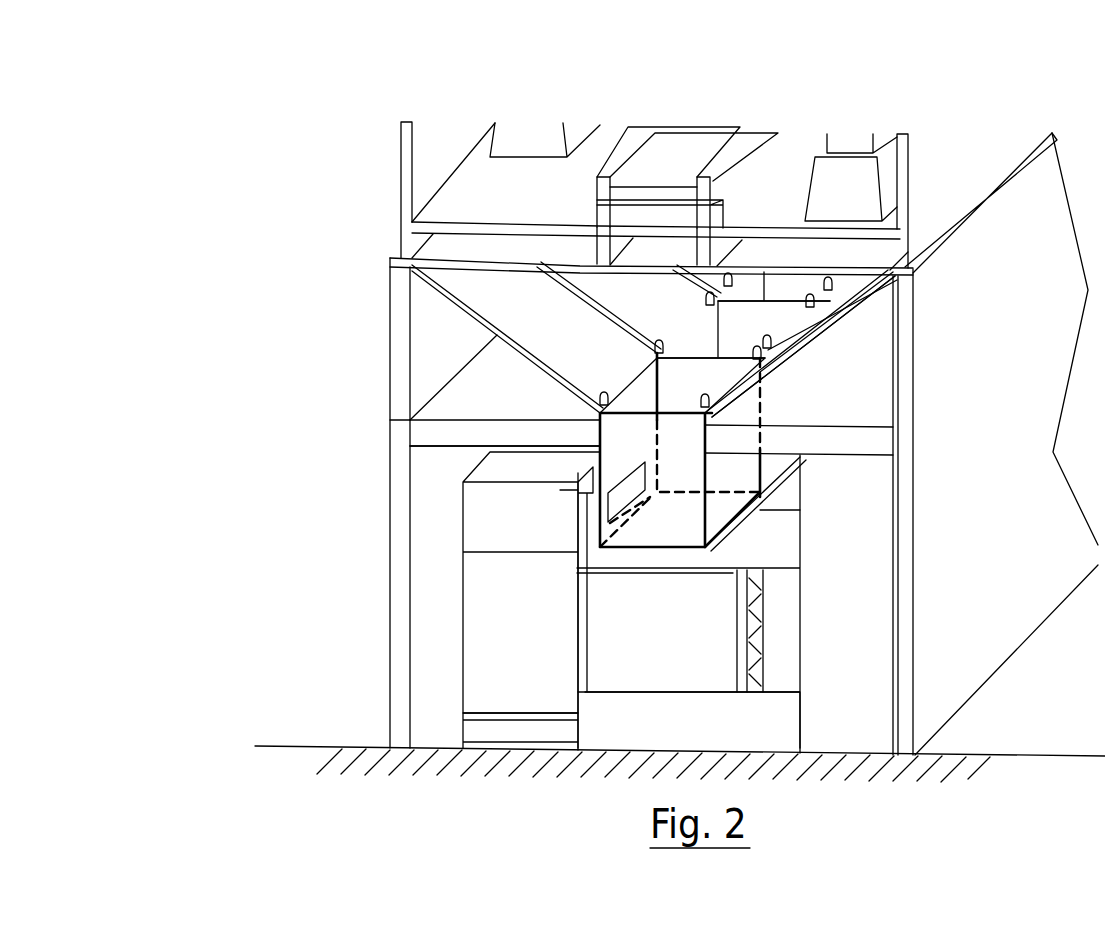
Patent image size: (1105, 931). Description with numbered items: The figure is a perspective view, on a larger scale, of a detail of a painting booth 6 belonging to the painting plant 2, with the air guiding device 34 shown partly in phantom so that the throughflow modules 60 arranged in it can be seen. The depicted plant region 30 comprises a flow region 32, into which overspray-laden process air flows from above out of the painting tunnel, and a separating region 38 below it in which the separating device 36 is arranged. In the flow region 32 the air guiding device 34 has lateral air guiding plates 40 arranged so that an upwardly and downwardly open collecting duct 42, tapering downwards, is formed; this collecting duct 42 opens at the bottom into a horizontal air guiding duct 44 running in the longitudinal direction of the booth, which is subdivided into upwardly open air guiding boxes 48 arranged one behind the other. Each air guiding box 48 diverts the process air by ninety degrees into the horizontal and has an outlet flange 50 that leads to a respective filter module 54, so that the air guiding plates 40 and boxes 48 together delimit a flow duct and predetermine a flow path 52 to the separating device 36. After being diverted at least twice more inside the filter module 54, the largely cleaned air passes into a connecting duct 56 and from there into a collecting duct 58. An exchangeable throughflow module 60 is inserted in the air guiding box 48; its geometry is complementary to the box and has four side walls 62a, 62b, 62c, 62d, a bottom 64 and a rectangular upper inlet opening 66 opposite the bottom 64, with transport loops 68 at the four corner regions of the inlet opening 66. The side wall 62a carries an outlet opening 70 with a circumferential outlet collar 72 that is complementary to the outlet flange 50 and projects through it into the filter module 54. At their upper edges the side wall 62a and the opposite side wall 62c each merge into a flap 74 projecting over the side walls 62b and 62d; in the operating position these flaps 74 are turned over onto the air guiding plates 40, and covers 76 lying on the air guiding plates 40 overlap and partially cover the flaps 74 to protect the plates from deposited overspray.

The bag filling apparatus 2 is at (343, 150).
The painting booth 6 is at (968, 156).
The plant region 30 is at (316, 531).
The flow region 32 is at (411, 375).
The air guiding device 34 is at (727, 410).
The separating device 36 is at (600, 706).
The separating region 38 is at (410, 628).
The air guiding plates 40 is at (428, 288).
The collecting duct 42 is at (675, 303).
The air guiding duct 44 is at (705, 378).
The air guiding boxes 48 is at (597, 441).
The outlet flange 50 is at (590, 523).
The flow path 52 is at (613, 353).
The filter module 54 is at (463, 689).
The connecting duct 56 is at (707, 677).
The collecting duct 58 is at (882, 628).
The throughflow module 60 is at (737, 530).
The side wall 62a is at (640, 398).
The side wall 62b is at (728, 370).
The side wall 62c is at (738, 475).
The side wall 62d is at (688, 535).
The bottom 64 is at (622, 550).
The inlet opening 66 is at (705, 366).
The transport loops 68 is at (650, 345).
The outlet opening 70 is at (623, 477).
The outlet collar 72 is at (613, 512).
The flap 74 is at (598, 413).
The covers 76 is at (527, 318).